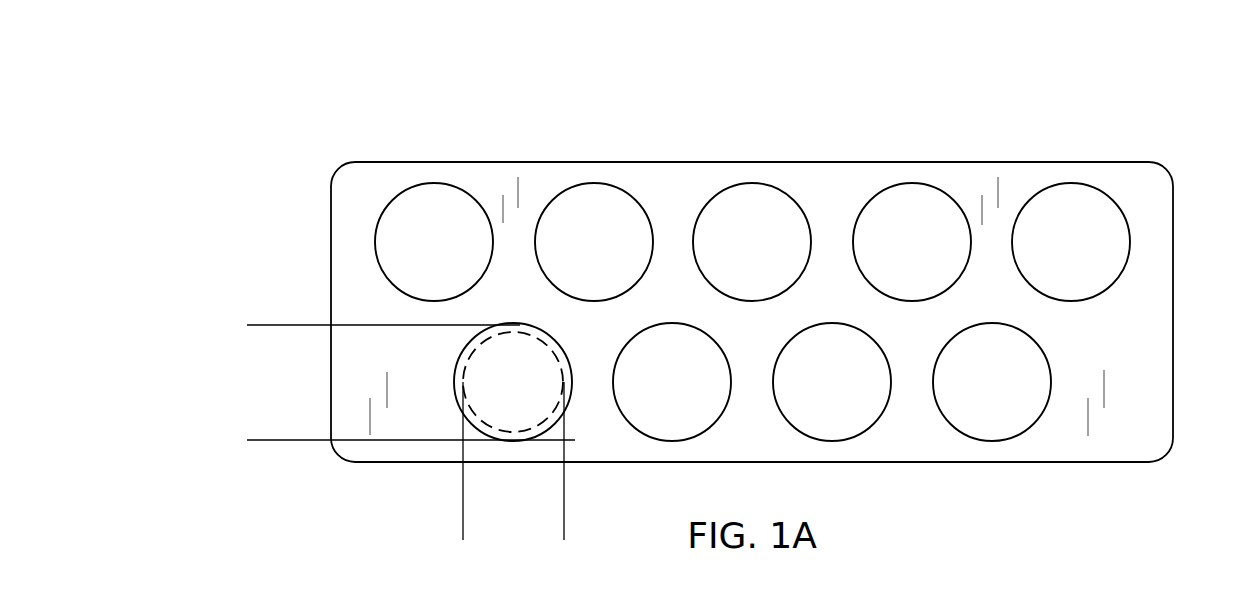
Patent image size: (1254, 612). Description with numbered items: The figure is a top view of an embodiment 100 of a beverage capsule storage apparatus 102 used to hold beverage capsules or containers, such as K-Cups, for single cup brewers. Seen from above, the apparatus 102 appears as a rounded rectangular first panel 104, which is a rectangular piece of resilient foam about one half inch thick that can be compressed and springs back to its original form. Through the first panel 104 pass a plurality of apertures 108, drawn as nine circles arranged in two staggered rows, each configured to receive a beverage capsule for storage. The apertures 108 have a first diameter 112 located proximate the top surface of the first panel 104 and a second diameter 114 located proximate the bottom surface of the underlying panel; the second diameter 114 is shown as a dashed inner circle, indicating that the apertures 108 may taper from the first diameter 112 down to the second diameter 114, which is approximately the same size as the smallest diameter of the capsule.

The embodiment 100 is at (400, 125).
The apparatus 102 is at (990, 149).
The first panel 104 is at (806, 303).
The apertures 108 is at (412, 257).
The first diameter 112 is at (271, 326).
The second diameter 114 is at (563, 515).